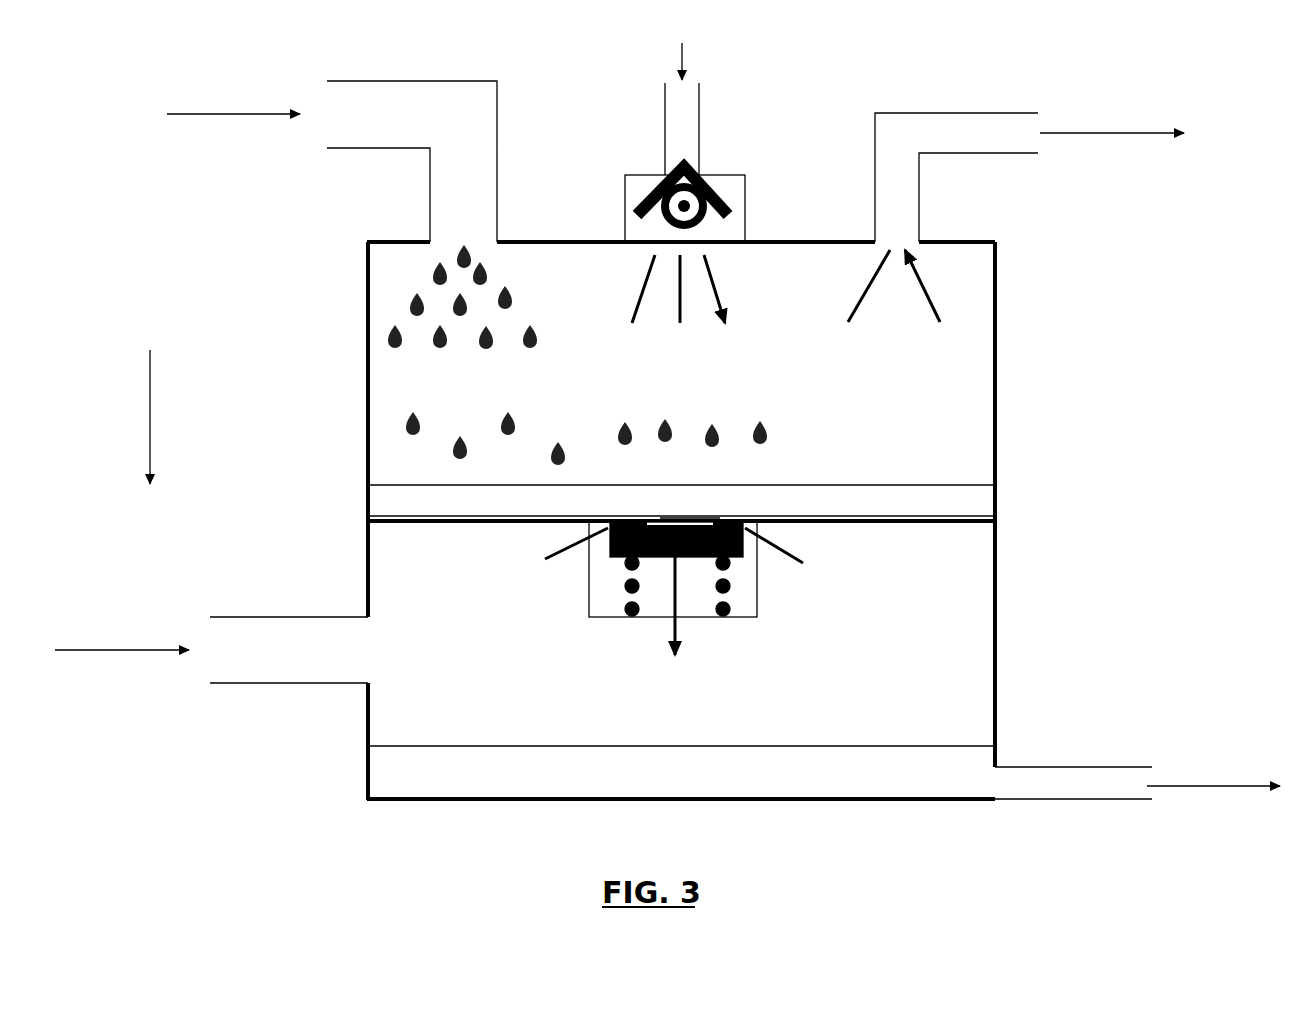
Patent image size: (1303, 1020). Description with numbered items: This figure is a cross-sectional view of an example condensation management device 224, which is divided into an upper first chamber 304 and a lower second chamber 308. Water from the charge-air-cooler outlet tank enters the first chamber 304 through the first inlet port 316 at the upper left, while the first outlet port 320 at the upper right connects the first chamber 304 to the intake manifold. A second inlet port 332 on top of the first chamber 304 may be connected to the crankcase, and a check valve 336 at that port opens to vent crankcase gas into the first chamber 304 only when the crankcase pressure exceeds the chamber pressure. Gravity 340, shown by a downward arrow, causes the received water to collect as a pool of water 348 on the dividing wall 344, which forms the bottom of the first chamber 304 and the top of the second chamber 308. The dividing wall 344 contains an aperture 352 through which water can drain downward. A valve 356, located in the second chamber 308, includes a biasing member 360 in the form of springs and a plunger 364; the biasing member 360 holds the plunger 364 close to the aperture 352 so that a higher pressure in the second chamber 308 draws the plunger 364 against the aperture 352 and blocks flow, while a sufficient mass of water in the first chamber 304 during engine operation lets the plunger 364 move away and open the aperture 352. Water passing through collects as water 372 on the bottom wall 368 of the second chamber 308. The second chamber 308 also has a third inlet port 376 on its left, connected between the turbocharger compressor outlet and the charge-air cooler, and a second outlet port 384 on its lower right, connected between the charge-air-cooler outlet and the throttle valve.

The condensation management device 224 is at (540, 242).
The first chamber 304 is at (681, 365).
The second chamber 308 is at (954, 559).
The first inlet port 316 is at (342, 148).
The first outlet port 320 is at (1022, 153).
The second inlet port 332 is at (665, 90).
The check valve 336 is at (625, 200).
The gravity 340 is at (150, 415).
The dividing wall 344 is at (366, 518).
The water 348 is at (681, 504).
The aperture 352 is at (695, 505).
The valve 356 is at (589, 575).
The biasing member 360 is at (626, 592).
The plunger 364 is at (610, 548).
The bottom wall 368 is at (435, 800).
The water 372 is at (681, 765).
The third inlet port 376 is at (235, 617).
The second outlet port 384 is at (1078, 767).